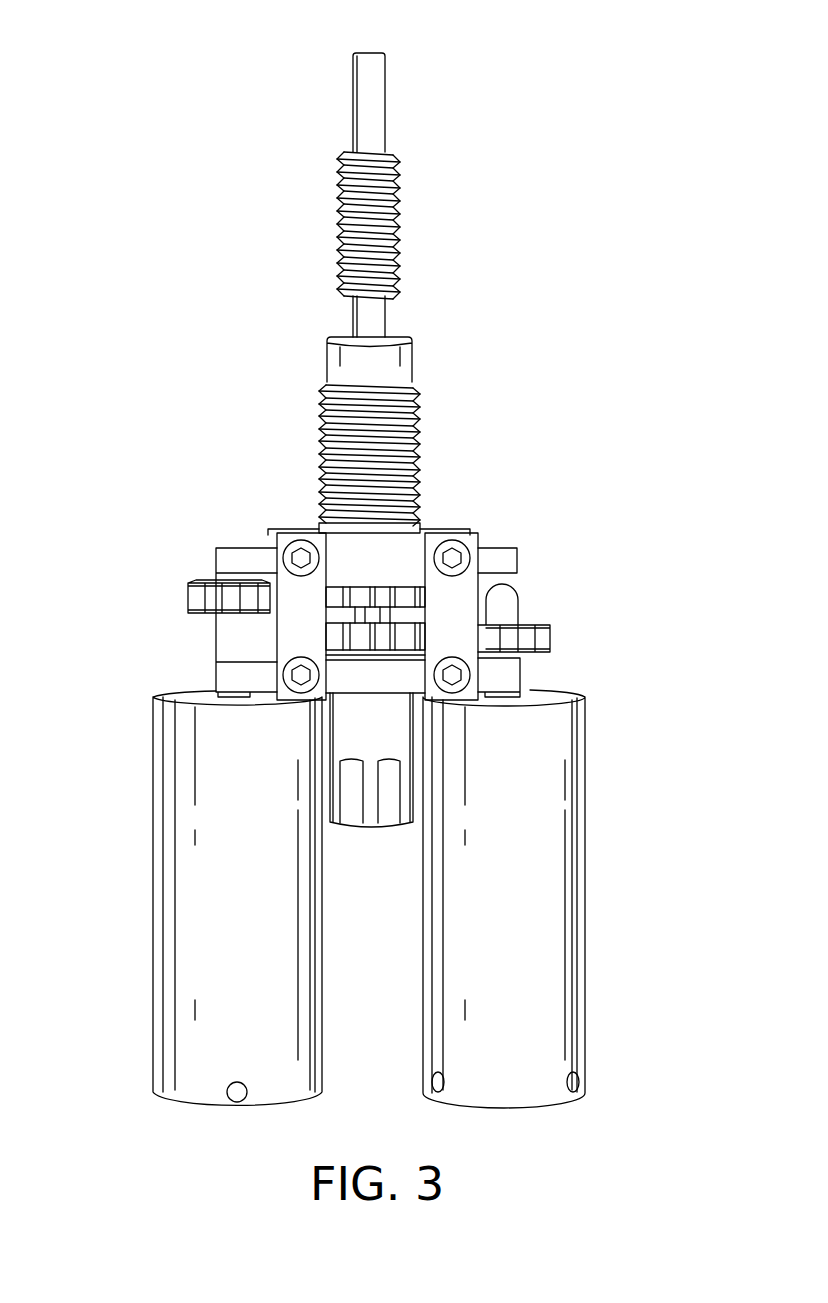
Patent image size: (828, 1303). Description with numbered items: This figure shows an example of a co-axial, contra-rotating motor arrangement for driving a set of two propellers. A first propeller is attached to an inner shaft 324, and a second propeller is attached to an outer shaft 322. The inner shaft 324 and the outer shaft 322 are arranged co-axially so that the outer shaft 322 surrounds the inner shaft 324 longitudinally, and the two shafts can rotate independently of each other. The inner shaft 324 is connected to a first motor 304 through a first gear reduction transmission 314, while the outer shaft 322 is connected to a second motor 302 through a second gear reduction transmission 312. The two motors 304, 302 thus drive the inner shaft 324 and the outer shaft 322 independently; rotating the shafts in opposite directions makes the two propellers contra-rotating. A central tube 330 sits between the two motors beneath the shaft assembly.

The second motor 302 is at (178, 924).
The first motor 304 is at (555, 779).
The second gear reduction transmission 312 is at (230, 600).
The first gear reduction transmission 314 is at (548, 632).
The outer shaft 322 is at (330, 413).
The inner shaft 324 is at (397, 210).
The central tube 330 is at (371, 760).